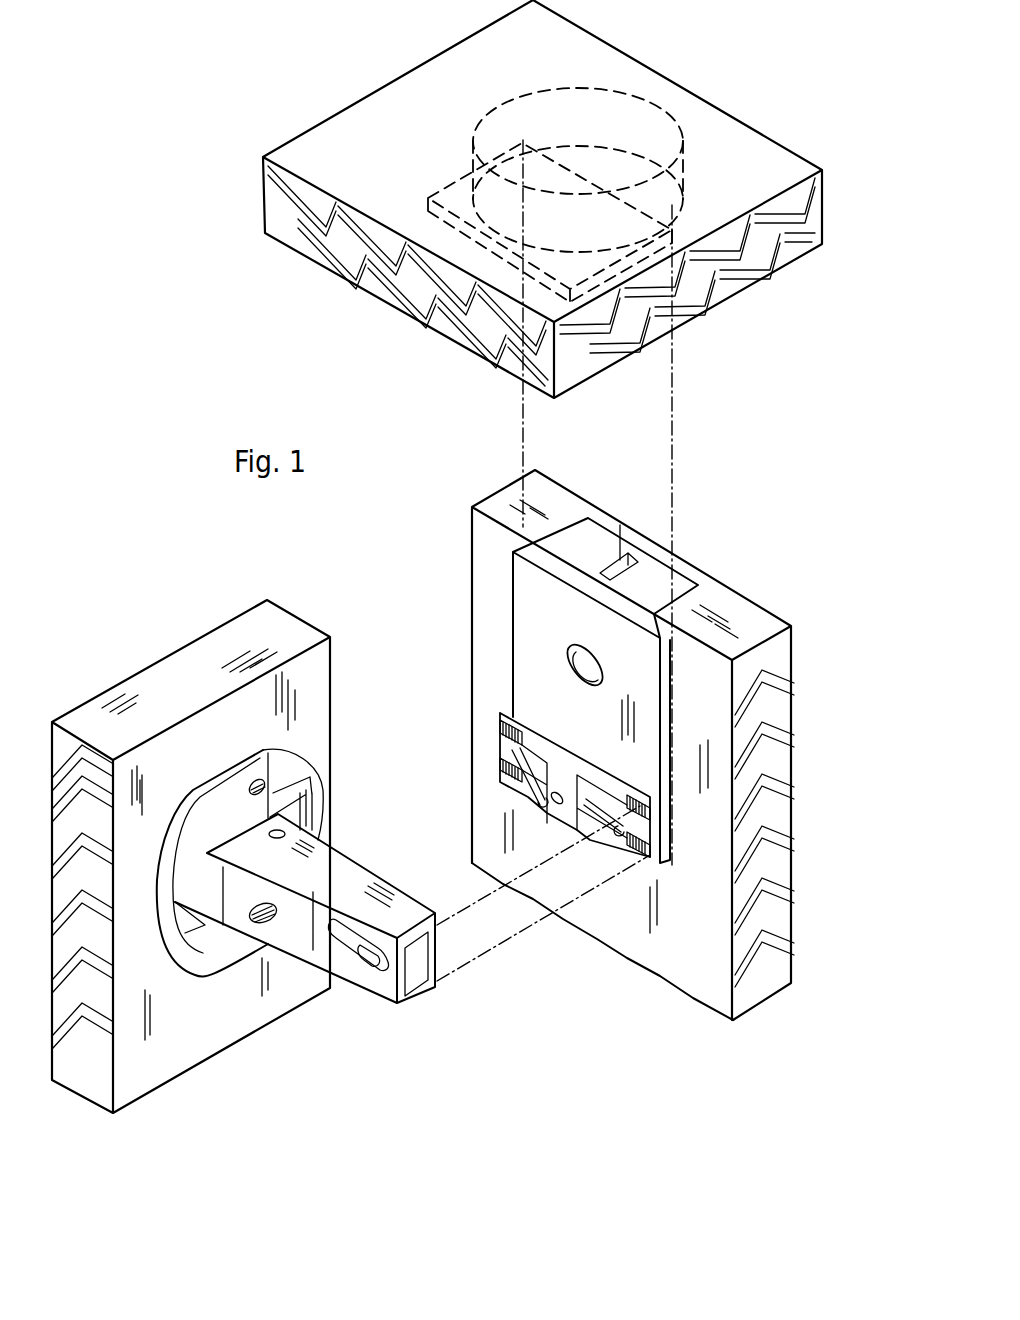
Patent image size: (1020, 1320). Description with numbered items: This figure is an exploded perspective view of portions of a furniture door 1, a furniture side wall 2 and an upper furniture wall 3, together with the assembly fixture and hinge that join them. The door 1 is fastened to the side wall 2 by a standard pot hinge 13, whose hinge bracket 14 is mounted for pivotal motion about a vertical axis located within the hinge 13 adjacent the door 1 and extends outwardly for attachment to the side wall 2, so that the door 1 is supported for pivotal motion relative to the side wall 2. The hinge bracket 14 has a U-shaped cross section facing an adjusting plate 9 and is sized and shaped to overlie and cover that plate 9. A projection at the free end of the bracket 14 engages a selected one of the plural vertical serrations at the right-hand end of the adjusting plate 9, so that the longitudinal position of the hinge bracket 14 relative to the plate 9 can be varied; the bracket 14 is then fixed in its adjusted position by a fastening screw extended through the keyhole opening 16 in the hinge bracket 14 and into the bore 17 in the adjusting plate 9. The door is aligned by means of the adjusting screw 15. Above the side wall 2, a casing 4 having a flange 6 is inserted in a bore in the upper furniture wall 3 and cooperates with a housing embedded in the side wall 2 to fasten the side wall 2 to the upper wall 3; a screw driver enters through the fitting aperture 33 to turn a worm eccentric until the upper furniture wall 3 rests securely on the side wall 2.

The door 1 is at (322, 702).
The furniture side wall 2 is at (723, 588).
The upper furniture wall 3 is at (715, 304).
The casing 4 is at (668, 113).
The flange 6 is at (583, 296).
The adjusting plate 9 is at (607, 833).
The pot hinge 13 is at (347, 783).
The hinge bracket 14 is at (350, 868).
The adjusting screw 15 is at (275, 917).
The keyhole opening 16 is at (377, 970).
The bore 17 is at (556, 808).
The fitting aperture 33 is at (598, 675).